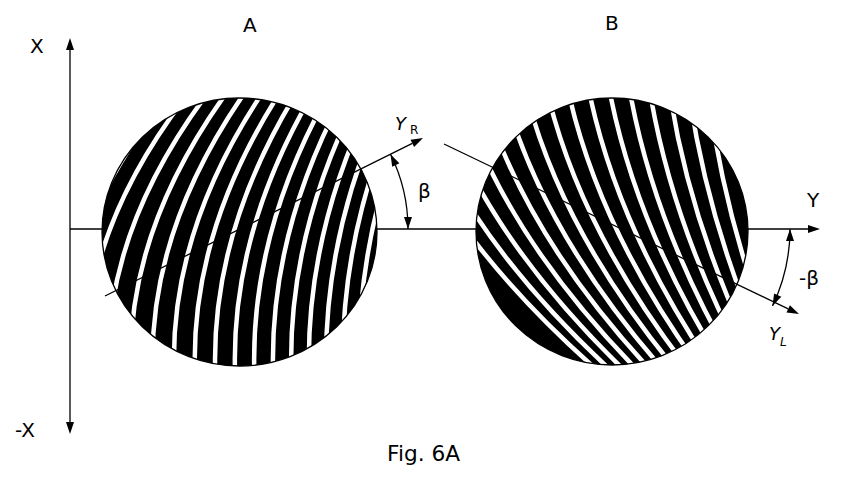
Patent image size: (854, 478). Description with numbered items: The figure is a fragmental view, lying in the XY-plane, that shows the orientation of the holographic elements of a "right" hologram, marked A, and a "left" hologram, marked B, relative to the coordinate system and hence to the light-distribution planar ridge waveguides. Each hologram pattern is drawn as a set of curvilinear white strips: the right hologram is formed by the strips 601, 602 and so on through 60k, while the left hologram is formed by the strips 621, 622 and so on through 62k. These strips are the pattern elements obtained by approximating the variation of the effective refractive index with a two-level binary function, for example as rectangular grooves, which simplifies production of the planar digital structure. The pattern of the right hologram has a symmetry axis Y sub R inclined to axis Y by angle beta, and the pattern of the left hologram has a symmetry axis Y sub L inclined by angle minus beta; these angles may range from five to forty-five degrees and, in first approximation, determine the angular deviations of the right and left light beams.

The curvilinear white strip 601 is at (310, 127).
The curvilinear white strip 602 is at (280, 123).
The curvilinear white strip 60k is at (148, 132).
The curvilinear white strip 621 is at (527, 142).
The curvilinear white strip 622 is at (545, 148).
The curvilinear white strip 62k is at (710, 157).